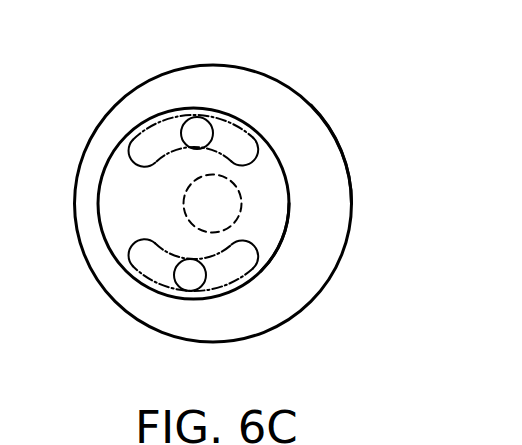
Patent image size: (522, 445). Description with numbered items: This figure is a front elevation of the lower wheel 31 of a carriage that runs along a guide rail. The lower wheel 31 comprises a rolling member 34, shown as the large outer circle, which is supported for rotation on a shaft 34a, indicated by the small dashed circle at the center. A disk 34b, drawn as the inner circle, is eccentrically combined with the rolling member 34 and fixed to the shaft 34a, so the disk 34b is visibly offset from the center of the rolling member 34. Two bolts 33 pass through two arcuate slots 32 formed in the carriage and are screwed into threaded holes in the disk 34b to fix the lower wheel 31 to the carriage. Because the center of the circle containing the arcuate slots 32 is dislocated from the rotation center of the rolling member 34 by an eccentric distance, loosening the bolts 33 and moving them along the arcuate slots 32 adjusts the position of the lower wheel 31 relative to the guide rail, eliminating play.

The lower wheel 31 is at (300, 97).
The arcuate slot 32 is at (143, 148).
The bolt 33 is at (198, 132).
The rolling member 34 is at (327, 122).
The shaft 34a is at (242, 203).
The disk 34b is at (285, 235).